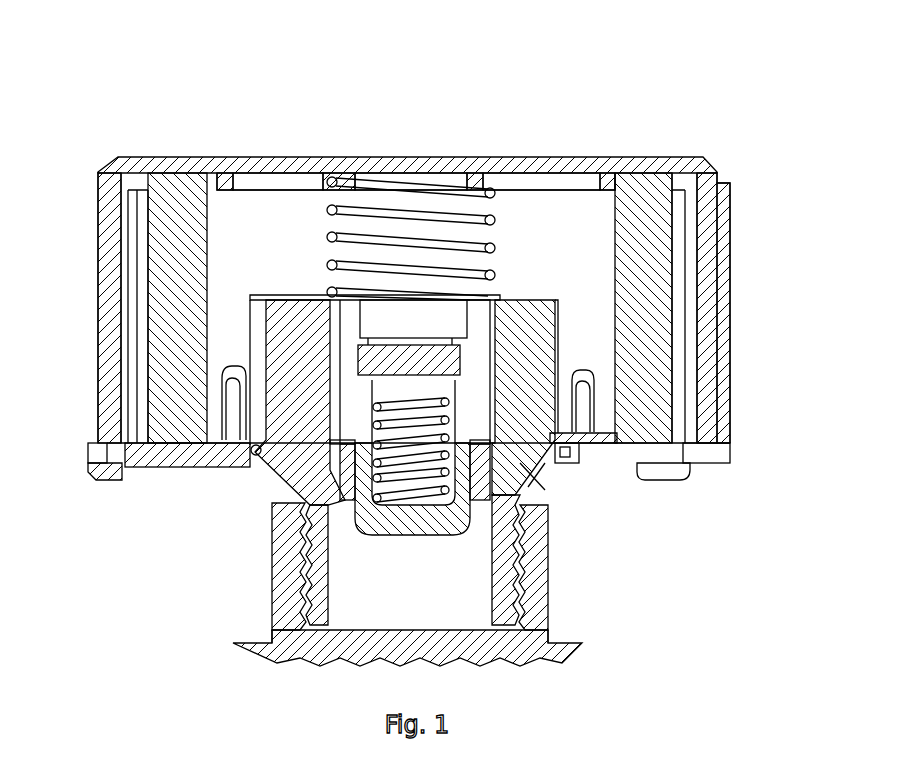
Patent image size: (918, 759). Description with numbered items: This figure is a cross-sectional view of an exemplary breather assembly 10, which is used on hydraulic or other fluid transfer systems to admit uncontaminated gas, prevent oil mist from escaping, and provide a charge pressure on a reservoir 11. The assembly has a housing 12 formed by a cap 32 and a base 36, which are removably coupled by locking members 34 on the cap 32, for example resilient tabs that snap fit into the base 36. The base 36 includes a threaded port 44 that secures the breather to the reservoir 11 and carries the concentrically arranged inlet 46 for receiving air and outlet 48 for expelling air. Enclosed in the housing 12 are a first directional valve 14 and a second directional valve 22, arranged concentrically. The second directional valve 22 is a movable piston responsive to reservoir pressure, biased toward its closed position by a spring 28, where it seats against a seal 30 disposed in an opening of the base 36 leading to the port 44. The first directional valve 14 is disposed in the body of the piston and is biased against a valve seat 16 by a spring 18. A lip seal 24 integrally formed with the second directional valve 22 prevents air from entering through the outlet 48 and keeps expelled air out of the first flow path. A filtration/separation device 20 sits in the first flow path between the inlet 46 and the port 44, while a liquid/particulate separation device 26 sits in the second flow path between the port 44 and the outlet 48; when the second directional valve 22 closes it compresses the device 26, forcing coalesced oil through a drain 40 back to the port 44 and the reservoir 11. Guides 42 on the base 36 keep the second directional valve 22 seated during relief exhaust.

The breather assembly 10 is at (93, 128).
The reservoir 11 is at (565, 640).
The housing 12 is at (248, 150).
The first directional valve 14 is at (372, 356).
The valve seat 16 is at (500, 300).
The spring 18 is at (372, 440).
The filtration/separation device 20 is at (644, 188).
The second directional valve 22 is at (290, 295).
The lip seal 24 is at (596, 407).
The liquid/particulate separation device 26 is at (548, 488).
The spring 28 is at (491, 214).
The seal 30 is at (560, 455).
The cap 32 is at (708, 162).
The locking members 34 is at (665, 480).
The base 36 is at (177, 467).
The drain 40 is at (300, 527).
The guides 42 is at (222, 372).
The port 44 is at (305, 582).
The inlet 46 is at (130, 468).
The outlet 48 is at (565, 455).